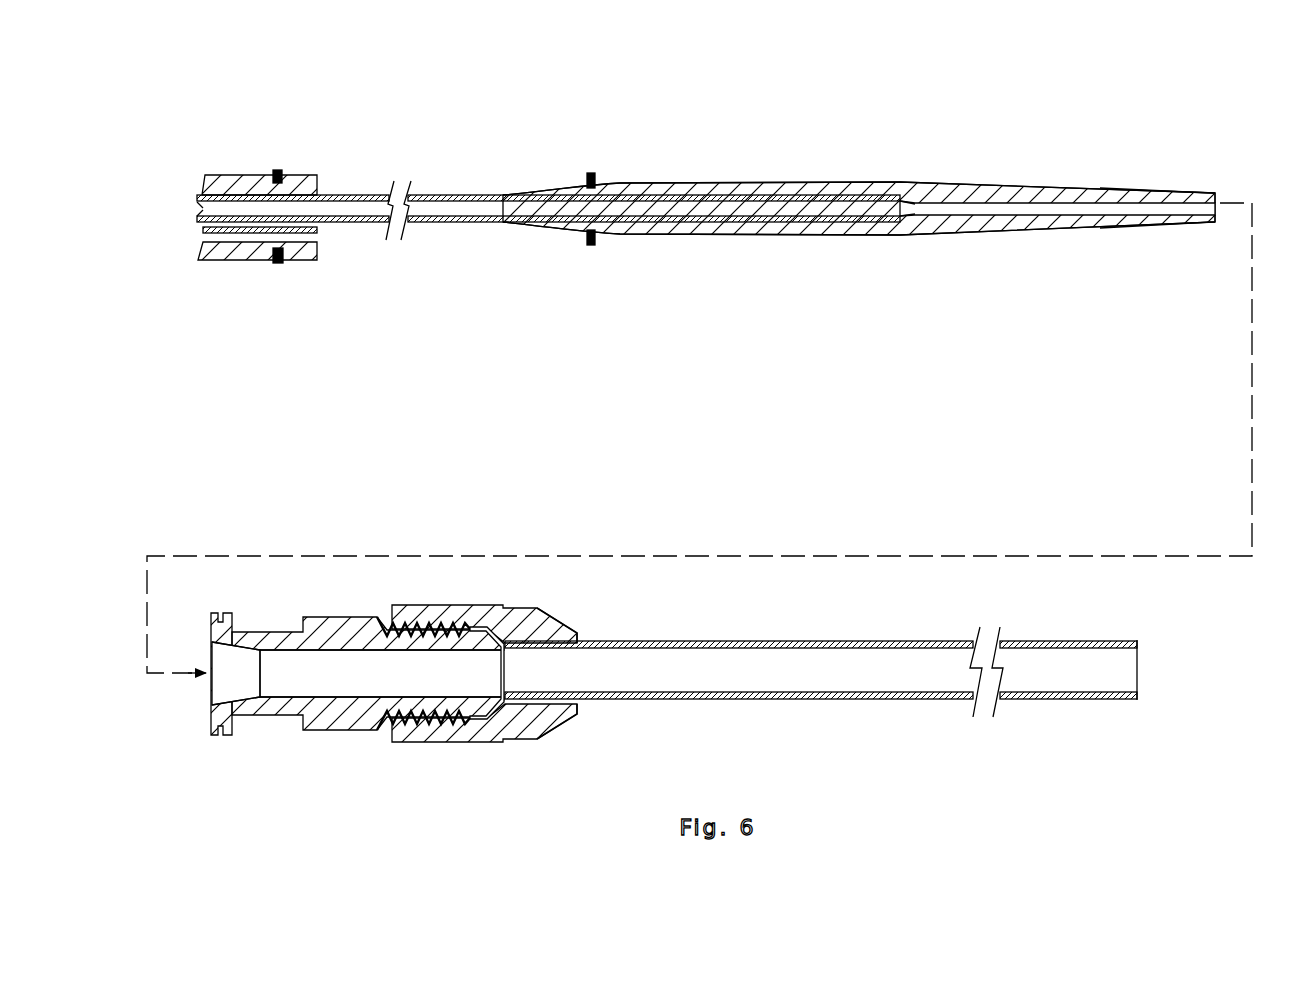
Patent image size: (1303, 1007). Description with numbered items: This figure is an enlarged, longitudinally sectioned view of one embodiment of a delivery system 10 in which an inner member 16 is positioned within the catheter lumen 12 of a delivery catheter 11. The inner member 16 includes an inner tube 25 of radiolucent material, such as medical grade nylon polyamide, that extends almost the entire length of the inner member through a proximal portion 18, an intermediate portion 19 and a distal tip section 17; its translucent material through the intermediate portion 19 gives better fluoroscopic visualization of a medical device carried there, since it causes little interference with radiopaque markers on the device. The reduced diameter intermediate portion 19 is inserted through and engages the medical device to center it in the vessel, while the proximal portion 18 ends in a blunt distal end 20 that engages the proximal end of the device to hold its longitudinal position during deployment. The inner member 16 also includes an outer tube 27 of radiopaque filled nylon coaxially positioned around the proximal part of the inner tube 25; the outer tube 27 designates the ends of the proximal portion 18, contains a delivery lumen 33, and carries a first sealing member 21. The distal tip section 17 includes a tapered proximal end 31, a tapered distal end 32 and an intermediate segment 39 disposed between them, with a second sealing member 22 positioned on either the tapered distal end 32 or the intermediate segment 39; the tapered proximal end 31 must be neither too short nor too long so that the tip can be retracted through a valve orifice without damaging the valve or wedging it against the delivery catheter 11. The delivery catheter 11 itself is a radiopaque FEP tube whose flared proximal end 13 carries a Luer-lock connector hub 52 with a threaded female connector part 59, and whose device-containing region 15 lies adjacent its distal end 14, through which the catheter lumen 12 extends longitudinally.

The delivery system 10 is at (740, 101).
The delivery catheter 11 is at (644, 623).
The catheter lumen 12 is at (1157, 680).
The flared proximal end 13 is at (511, 723).
The distal end 14 is at (1142, 633).
The device-containing region 15 is at (1022, 625).
The inner member 16 is at (505, 156).
The distal tip section 17 is at (782, 157).
The proximal portion 18 is at (230, 163).
The intermediate portion 19 is at (374, 179).
The blunt distal end 20 is at (318, 194).
The first sealing member 21 is at (278, 264).
The second sealing member 22 is at (592, 247).
The inner tube 25 is at (423, 224).
The outer tube 27 is at (298, 176).
The tapered proximal end 31 is at (549, 181).
The tapered distal end 32 is at (987, 184).
The delivery lumen 33 is at (202, 233).
The intermediate segment 39 is at (660, 181).
The Luer-lock connector hub 52 is at (430, 591).
The threaded female connector part 59 is at (553, 615).